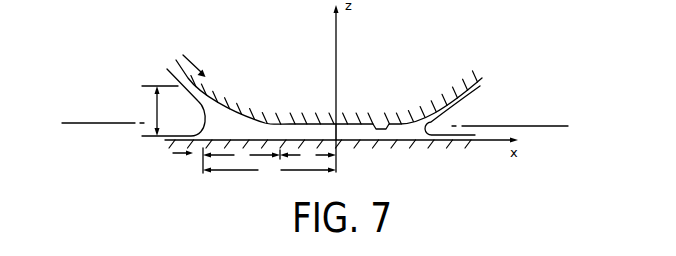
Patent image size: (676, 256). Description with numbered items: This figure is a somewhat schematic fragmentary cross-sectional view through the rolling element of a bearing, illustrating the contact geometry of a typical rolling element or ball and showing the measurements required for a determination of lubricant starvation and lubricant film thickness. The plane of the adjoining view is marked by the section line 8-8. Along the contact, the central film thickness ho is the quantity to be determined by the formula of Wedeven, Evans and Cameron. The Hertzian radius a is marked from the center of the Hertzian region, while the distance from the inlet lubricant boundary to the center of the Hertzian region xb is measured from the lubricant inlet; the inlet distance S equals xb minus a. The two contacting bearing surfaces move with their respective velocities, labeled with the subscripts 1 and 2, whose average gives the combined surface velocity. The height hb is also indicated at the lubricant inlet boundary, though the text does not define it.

The section line 8- 8 is at (72, 167).
The velocity of the bearing surfaces 1 is at (196, 59).
The velocity of the bearing surfaces 2 is at (180, 166).
The nozzle lip height hb is at (160, 111).
The inlet distance S is at (241, 159).
The Hertzian radius a is at (308, 154).
The distance from the inlet lubricant boundary to the center of the Hertzian region xb is at (269, 169).
The central film thickness ho is at (339, 129).